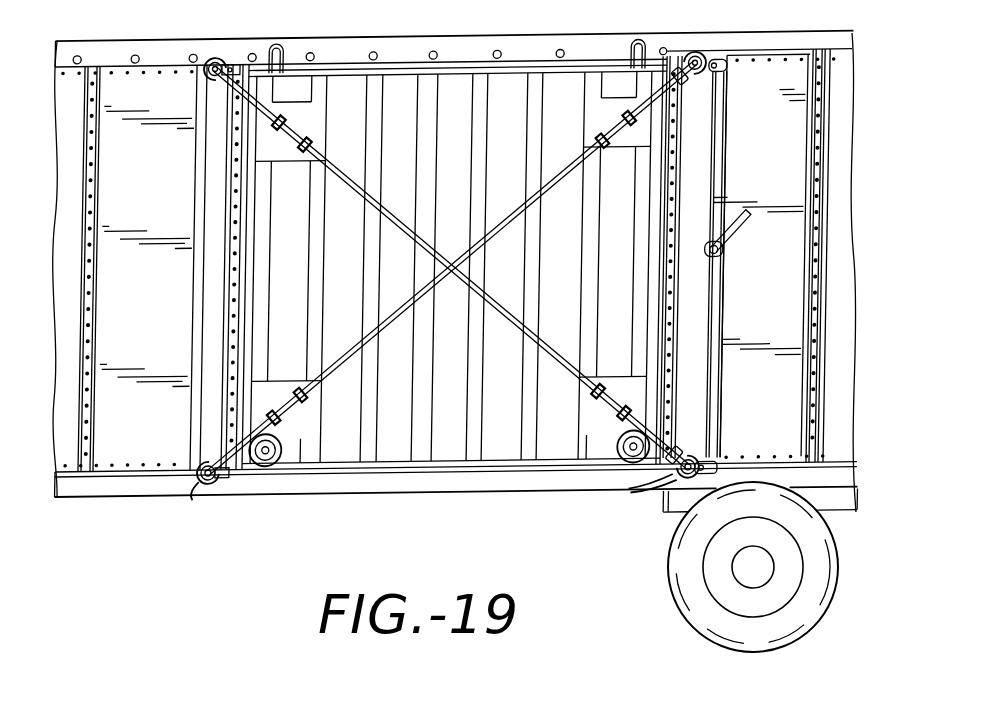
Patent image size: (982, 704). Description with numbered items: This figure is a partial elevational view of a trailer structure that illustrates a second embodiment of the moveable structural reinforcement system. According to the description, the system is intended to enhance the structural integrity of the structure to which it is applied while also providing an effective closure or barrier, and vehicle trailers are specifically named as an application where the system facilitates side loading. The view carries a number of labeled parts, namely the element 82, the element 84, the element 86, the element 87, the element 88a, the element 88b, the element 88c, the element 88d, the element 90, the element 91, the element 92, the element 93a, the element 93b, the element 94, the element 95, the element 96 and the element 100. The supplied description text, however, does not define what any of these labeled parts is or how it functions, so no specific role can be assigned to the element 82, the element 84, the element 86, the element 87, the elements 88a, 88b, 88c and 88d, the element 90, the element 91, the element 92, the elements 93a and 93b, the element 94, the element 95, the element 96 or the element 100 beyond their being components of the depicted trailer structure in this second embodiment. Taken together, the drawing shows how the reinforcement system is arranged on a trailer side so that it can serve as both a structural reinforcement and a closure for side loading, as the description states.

The pivot pin 82 is at (207, 80).
The tensioning cable 84 is at (214, 60).
The tensioning cable 86 is at (588, 148).
The hook 87 is at (692, 52).
The side panel 88a is at (147, 268).
The side panel 88b is at (650, 133).
The lower panel section 88c is at (300, 433).
The lower panel section 88d is at (587, 425).
The latch bracket 90 is at (725, 248).
The retainer bracket 91 is at (713, 60).
The clevis bracket 92 is at (706, 74).
The upper rail 93a is at (473, 57).
The lower rail 93b is at (421, 468).
The latch handle 94 is at (740, 229).
The latch pivot 95 is at (717, 253).
The latch bar 96 is at (716, 173).
The floor 100 is at (437, 156).